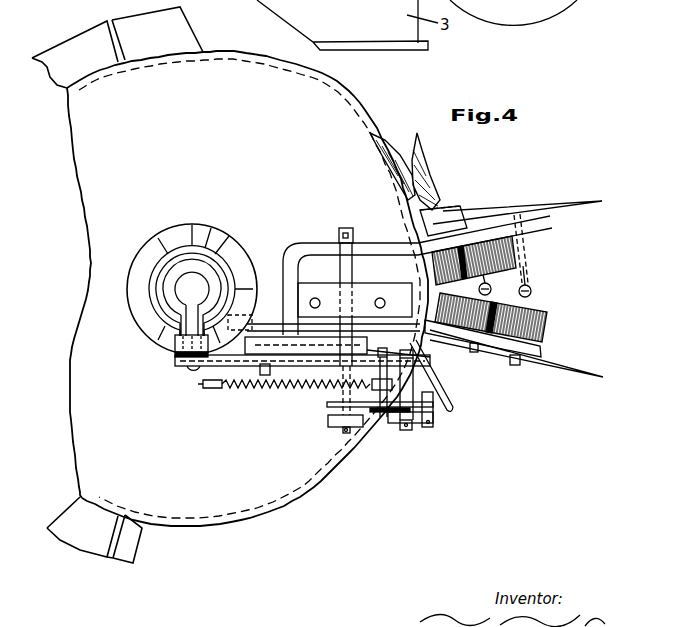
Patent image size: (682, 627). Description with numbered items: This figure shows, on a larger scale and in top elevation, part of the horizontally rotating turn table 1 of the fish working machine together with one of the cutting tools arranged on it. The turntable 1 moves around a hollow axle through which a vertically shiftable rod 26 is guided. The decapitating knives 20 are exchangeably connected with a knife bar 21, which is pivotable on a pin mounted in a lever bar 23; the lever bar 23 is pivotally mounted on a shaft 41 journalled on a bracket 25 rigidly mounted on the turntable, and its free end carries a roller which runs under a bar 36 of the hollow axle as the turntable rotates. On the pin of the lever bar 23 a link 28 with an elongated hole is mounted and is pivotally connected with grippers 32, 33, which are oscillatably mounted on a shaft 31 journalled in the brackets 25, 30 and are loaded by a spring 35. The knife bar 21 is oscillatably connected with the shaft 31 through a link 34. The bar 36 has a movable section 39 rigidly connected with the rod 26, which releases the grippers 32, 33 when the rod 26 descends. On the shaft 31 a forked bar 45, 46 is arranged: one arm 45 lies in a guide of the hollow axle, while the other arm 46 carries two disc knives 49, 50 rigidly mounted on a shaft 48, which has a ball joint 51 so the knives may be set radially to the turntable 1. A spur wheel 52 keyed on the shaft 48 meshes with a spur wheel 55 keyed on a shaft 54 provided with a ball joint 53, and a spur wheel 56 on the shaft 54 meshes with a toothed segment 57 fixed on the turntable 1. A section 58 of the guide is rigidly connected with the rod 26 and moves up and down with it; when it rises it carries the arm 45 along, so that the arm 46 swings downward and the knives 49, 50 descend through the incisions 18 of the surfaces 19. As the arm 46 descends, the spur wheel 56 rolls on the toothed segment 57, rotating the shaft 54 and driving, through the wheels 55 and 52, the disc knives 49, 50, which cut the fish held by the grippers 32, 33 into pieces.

The turn table 1 is at (82, 152).
The surfaces 19 is at (75, 287).
The incisions 18 is at (155, 281).
The vertical rod 26 is at (218, 260).
The bar 36 is at (143, 289).
The section of the guide 58 is at (247, 300).
The arm of the forked bar 45 is at (258, 318).
The shaft 31 is at (348, 226).
The bracket 25 is at (312, 345).
The movable section 39 is at (175, 344).
The lever bar 23 is at (215, 361).
The spring 35 is at (230, 386).
The shaft 41 is at (266, 376).
The bracket 30 is at (330, 427).
The link 28 is at (387, 418).
The decapitating knives 20 is at (412, 430).
The bar 21 is at (440, 417).
The gripper 33 is at (362, 405).
The link 34 is at (447, 403).
The gripper 32 is at (430, 357).
The toothed segment 57 is at (467, 227).
The disc knife 49 is at (570, 208).
The arm of the forked bar 46 is at (510, 235).
The spur wheel 56 is at (519, 250).
The shaft 48 is at (523, 270).
The ball joint 53 is at (497, 287).
The ball joint 51 is at (532, 291).
The spur wheel 52 is at (548, 325).
The disc knife 50 is at (516, 353).
The shaft 54 is at (474, 351).
The spur wheel 55 is at (516, 364).